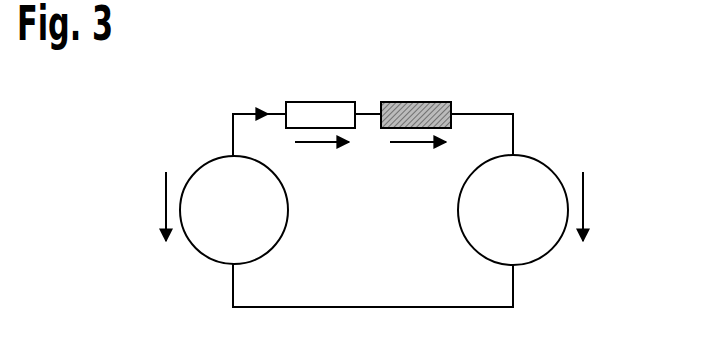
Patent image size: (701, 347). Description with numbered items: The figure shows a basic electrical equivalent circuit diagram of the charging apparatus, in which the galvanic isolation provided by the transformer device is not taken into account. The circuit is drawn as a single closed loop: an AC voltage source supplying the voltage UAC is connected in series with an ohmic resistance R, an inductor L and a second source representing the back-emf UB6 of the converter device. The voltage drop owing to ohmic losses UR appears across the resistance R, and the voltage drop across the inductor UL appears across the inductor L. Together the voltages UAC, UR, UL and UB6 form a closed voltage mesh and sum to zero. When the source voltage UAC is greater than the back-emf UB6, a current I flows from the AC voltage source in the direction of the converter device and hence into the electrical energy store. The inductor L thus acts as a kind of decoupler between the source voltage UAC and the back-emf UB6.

The ohmic resistance R is at (320, 97).
The inductor L is at (416, 96).
The current I is at (240, 93).
The voltage drop owing to ohmic losses UR is at (322, 165).
The voltage drop across the inductor UL is at (418, 165).
The voltage of the AC voltage source UAC is at (136, 206).
The back-emf of the converter device UB6 is at (620, 206).